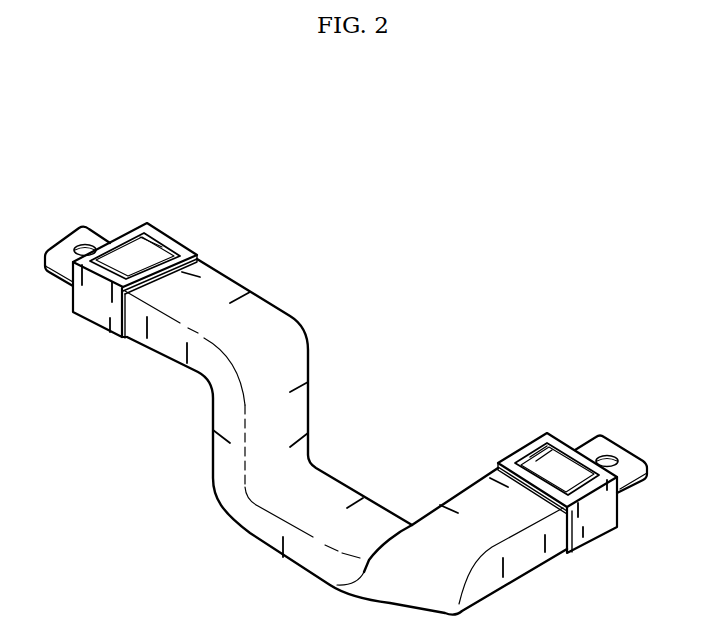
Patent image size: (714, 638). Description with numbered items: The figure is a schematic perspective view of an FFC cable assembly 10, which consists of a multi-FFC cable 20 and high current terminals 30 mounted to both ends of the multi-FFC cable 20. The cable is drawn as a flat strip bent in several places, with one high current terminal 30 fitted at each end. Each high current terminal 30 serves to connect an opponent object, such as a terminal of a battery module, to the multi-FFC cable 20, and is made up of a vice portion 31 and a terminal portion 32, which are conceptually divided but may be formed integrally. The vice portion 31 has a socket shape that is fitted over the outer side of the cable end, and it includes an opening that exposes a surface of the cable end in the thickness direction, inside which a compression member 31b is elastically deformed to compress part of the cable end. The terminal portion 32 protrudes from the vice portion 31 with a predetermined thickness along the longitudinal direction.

The FFC cable assembly 10 is at (233, 91).
The multi-FFC cable 20 is at (303, 319).
The high current terminal 30 is at (172, 176).
The vice portion 31 is at (145, 222).
The compression member 31b is at (535, 458).
The terminal portion 32 is at (98, 233).